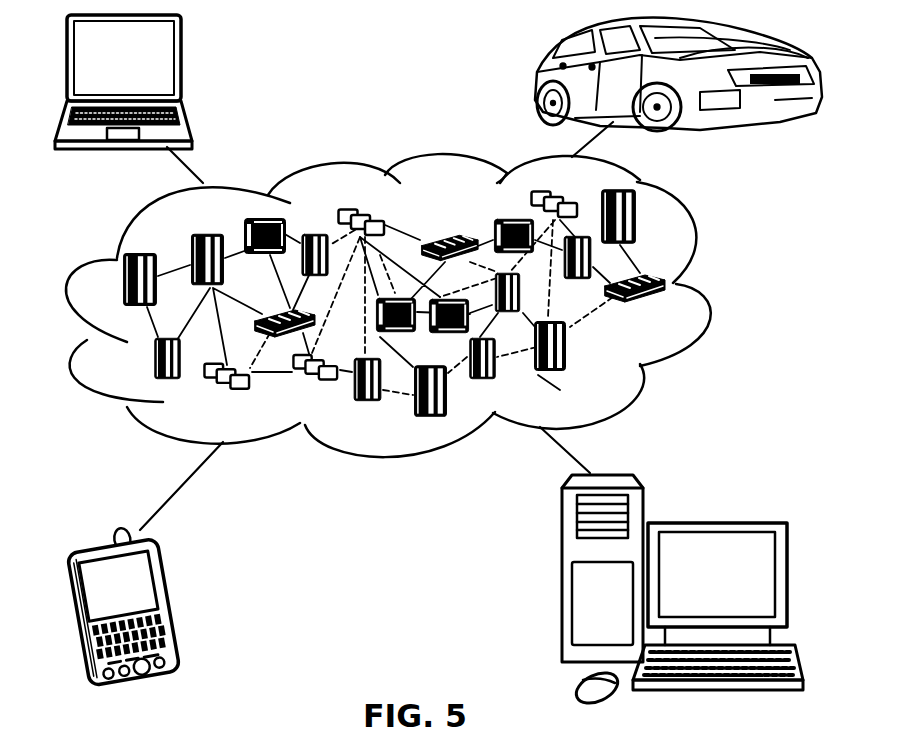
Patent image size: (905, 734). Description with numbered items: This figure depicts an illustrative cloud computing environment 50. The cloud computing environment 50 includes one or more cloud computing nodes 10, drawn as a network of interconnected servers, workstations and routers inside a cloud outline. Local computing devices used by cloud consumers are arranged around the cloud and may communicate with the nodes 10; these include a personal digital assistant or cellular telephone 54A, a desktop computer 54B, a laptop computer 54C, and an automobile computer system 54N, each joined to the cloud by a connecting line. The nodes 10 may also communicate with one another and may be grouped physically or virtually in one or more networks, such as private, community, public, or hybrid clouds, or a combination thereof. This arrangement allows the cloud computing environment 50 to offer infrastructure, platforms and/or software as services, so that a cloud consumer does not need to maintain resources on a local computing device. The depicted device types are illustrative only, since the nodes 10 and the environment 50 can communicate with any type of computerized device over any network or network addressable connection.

The cloud computing node 10 is at (684, 311).
The cloud computing environment 50 is at (718, 287).
The personal digital assistant or cellular telephone 54A is at (172, 598).
The desktop computer 54B is at (718, 523).
The laptop computer 54C is at (183, 62).
The automobile computer system 54N is at (538, 77).